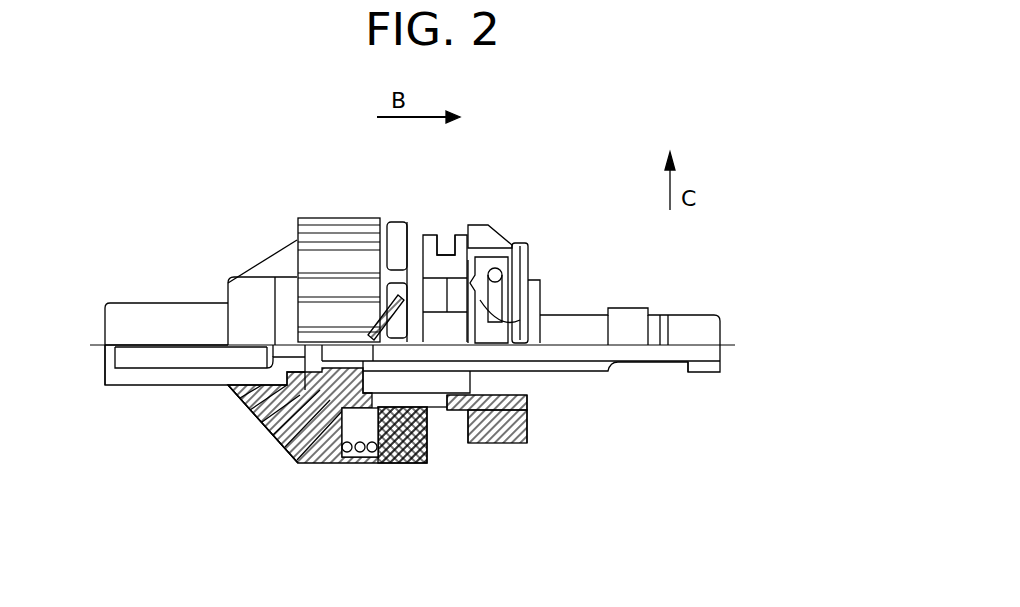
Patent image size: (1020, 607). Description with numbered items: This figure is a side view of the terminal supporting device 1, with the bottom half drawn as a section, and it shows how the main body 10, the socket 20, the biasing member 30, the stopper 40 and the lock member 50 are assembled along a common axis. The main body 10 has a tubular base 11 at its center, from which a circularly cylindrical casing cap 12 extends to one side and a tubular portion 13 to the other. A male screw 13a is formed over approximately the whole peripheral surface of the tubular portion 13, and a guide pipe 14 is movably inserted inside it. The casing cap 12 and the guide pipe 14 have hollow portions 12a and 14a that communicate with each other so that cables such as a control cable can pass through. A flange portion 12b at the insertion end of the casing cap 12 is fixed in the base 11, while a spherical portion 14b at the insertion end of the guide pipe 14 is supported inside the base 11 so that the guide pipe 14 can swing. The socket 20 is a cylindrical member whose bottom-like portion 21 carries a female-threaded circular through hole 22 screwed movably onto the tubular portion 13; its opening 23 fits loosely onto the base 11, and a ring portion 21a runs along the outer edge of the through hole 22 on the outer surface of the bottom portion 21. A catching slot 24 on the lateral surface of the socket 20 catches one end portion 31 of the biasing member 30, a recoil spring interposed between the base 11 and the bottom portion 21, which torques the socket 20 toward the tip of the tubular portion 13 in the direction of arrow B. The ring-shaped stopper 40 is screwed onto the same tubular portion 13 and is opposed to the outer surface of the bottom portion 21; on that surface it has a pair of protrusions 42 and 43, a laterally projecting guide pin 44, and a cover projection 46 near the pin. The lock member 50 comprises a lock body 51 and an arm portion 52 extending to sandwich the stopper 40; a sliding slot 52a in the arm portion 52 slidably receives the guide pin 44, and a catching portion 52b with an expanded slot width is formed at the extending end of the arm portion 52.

The terminal supporting device 1 is at (758, 261).
The main body 10 is at (257, 236).
The tubular base 11 is at (257, 298).
The casing cap 12 is at (158, 318).
The hollow portion 12a is at (167, 358).
The flange portion 12b is at (272, 418).
The tubular portion 13 is at (445, 420).
The male screw 13a is at (522, 412).
The guide pipe 14 is at (627, 322).
The hollow portion 14a is at (626, 373).
The spherical portion 14b is at (333, 465).
The socket 20 is at (345, 195).
The bottom-like portion 21 is at (395, 465).
The ring portion 21a is at (425, 410).
The circular through hole 22 is at (372, 460).
The opening 23 is at (300, 463).
The catching slot 24 is at (387, 305).
The biasing member 30 is at (355, 468).
The end portion 31 is at (403, 238).
The stopper 40 is at (511, 212).
The protrusion 42 is at (507, 445).
The protrusion 43 is at (455, 425).
The guide pin 44 is at (510, 250).
The cover projection 46 is at (525, 398).
The lock member 50 is at (442, 212).
The lock body 51 is at (452, 236).
The arm portion 52 is at (517, 258).
The sliding slot 52a is at (535, 305).
The catching portion 52b is at (520, 355).